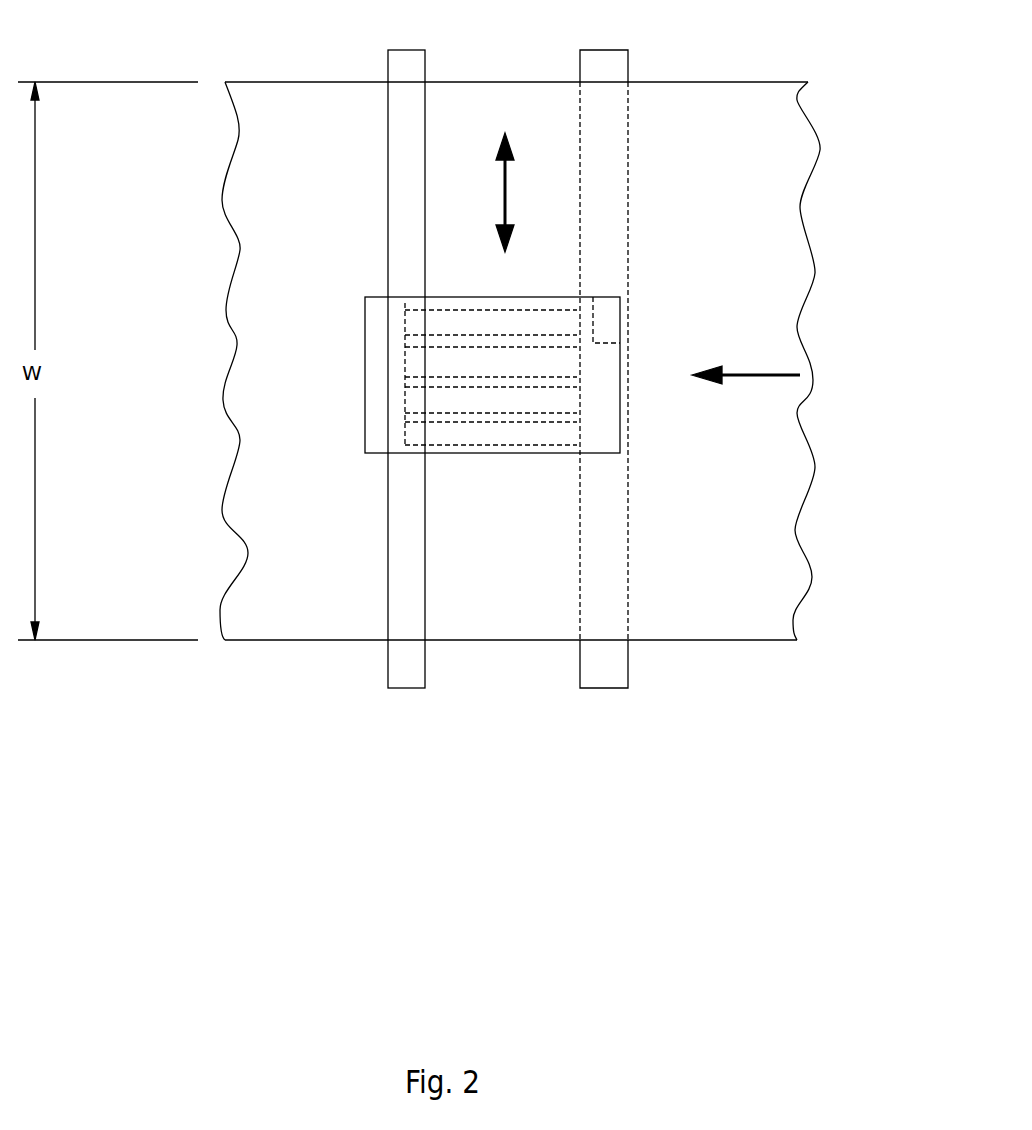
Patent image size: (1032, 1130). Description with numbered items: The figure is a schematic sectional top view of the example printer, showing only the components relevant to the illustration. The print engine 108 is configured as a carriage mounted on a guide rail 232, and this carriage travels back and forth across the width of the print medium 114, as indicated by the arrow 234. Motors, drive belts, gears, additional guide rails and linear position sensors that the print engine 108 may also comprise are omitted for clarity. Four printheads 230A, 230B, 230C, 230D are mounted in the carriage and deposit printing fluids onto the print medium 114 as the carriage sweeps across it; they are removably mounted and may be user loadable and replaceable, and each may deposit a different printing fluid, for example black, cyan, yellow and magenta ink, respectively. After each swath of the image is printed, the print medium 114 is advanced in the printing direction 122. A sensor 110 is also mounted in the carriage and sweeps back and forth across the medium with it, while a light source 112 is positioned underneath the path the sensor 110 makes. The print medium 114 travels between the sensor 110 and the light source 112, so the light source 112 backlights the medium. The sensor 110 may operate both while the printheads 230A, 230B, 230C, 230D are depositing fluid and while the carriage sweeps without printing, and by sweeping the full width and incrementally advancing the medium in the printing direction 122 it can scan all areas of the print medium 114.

The print engine 108 is at (363, 310).
The sensor 110 is at (607, 323).
The light source 112 is at (605, 670).
The print medium 114 is at (752, 178).
The printing direction 122 is at (746, 364).
The printhead 230A is at (405, 318).
The printhead 230B is at (405, 362).
The printhead 230C is at (405, 398).
The printhead 230D is at (405, 435).
The guide rail 232 is at (410, 670).
The arrow 234 is at (500, 197).